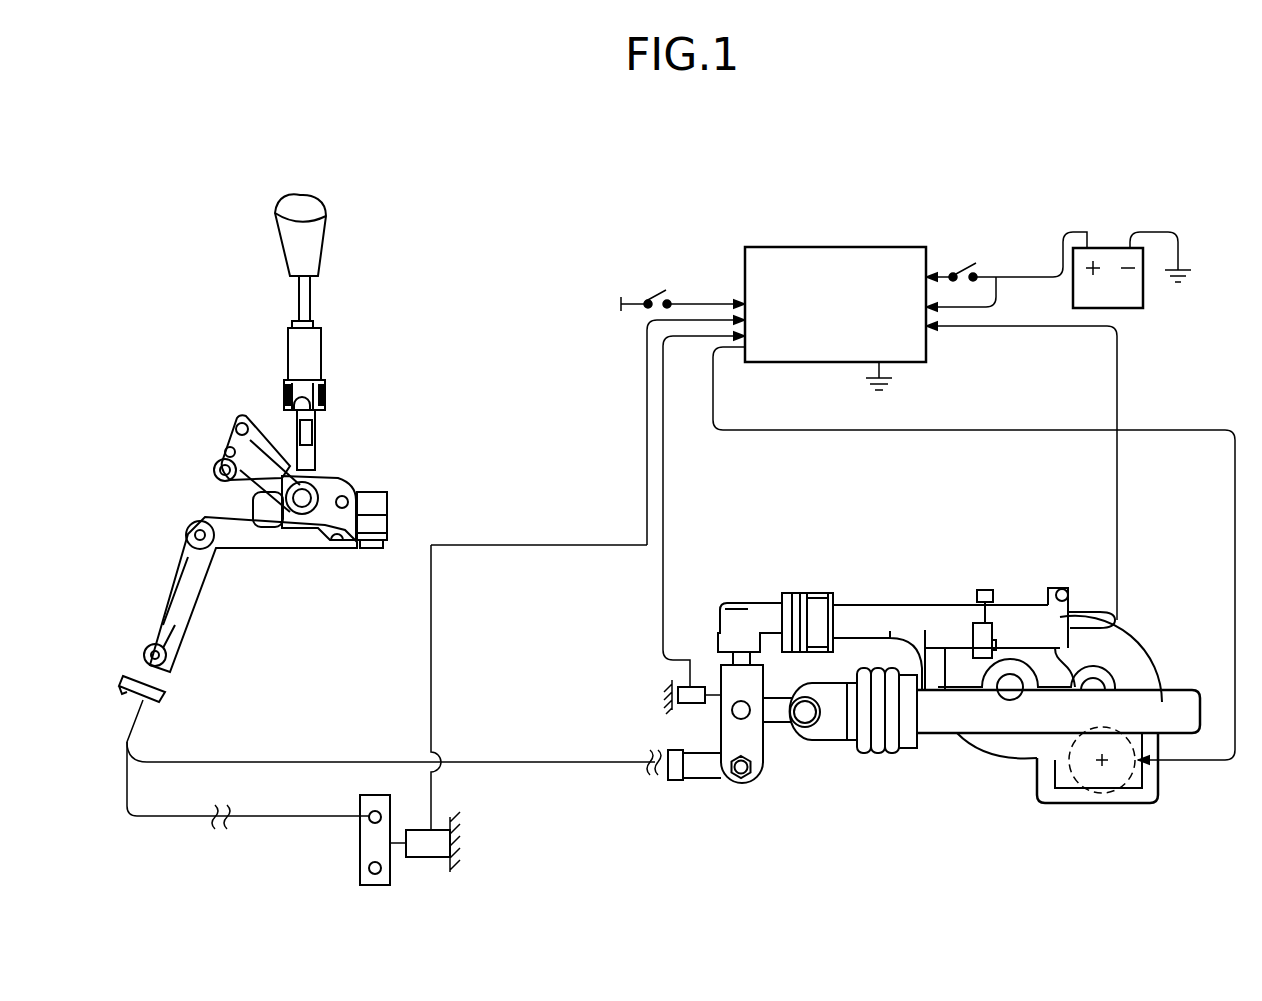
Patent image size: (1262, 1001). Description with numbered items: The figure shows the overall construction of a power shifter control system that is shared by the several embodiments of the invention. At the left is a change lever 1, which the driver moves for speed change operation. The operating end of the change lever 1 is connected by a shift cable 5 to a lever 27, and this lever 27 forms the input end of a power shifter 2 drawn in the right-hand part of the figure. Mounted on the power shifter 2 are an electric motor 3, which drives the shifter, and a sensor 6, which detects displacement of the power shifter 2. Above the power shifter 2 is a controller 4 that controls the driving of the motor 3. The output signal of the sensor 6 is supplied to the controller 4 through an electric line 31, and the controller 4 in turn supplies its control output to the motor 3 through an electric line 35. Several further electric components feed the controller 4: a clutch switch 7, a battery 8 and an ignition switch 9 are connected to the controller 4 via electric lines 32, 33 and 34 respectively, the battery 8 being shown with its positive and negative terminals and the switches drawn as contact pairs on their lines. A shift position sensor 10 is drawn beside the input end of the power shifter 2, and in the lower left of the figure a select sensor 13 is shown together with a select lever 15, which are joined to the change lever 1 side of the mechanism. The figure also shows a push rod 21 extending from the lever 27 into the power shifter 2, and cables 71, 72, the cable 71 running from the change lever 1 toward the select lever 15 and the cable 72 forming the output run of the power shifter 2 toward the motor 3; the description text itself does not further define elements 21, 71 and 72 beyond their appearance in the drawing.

The change lever 1 is at (330, 248).
The power shifter 2 is at (742, 600).
The electric motor 3 is at (1060, 790).
The controller 4 is at (838, 247).
The shift cable 5 is at (482, 762).
The sensor 6 is at (1070, 614).
The clutch switch 7 is at (654, 296).
The battery 8 is at (1105, 246).
The ignition switch 9 is at (972, 265).
The shift position sensor 10 is at (685, 708).
The select sensor 13 is at (430, 858).
The select lever 15 is at (360, 862).
The push rod 21 is at (805, 714).
The lever 27 is at (742, 785).
The electric line 31 is at (1118, 383).
The electric line 32 is at (713, 300).
The electric line 33 is at (948, 272).
The electric line 34 is at (972, 308).
The electric line 35 is at (1234, 532).
The cable 71 is at (281, 818).
The cable 72 is at (880, 603).